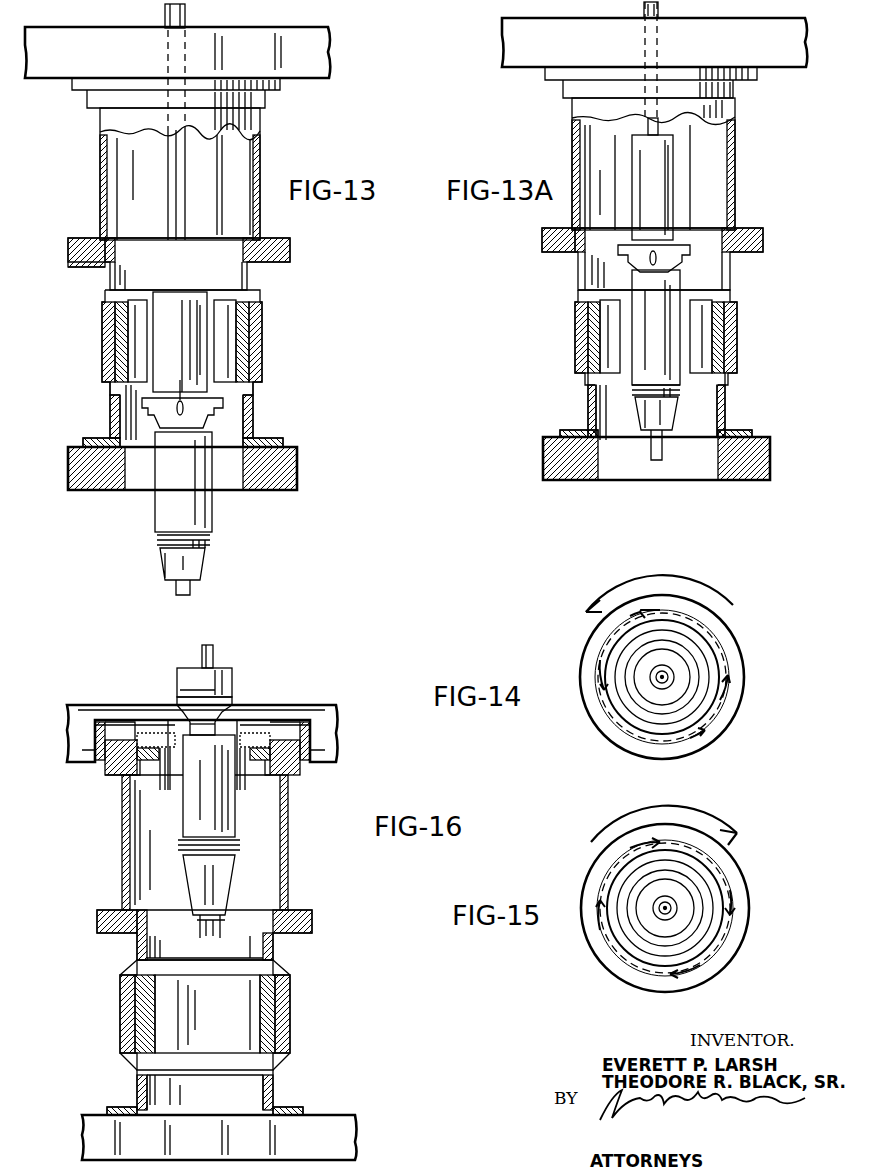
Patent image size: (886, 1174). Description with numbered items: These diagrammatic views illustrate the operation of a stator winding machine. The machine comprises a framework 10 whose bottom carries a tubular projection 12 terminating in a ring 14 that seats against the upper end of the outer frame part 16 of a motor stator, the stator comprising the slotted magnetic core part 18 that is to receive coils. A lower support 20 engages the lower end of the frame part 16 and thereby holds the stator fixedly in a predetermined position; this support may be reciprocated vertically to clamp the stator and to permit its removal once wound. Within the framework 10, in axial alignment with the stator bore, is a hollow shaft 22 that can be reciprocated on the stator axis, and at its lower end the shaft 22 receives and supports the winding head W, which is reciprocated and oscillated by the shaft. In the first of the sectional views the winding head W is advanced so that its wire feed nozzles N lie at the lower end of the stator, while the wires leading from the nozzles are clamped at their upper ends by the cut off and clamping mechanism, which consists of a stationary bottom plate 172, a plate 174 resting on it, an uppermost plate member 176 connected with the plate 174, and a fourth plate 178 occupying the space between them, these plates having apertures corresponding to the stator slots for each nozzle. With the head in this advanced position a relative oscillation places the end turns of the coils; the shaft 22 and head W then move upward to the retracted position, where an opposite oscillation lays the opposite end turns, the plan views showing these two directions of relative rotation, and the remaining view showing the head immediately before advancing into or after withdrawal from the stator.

In FIG. 13, the framework 10 is at (318, 74).
In FIG. 13A, the framework 10 is at (478, 72).
In FIG. 13, the tubular projection 12 is at (272, 146).
In FIG. 13A, the tubular projection 12 is at (737, 170).
In FIG. 16, the tubular projection 12 is at (296, 863).
In FIG. 13, the ring 14 is at (290, 258).
In FIG. 13A, the ring 14 is at (535, 258).
In FIG. 16, the ring 14 is at (312, 930).
In FIG. 13, the outer frame part 16 is at (262, 332).
In FIG. 13A, the outer frame part 16 is at (575, 312).
In FIG. 14, the outer frame part 16 is at (583, 664).
In FIG. 15, the outer frame part 16 is at (594, 882).
In FIG. 16, the outer frame part 16 is at (290, 1000).
In FIG. 13, the slotted magnetic core part 18 is at (250, 376).
In FIG. 13A, the slotted magnetic core part 18 is at (588, 356).
In FIG. 14, the slotted magnetic core part 18 is at (613, 692).
In FIG. 15, the slotted magnetic core part 18 is at (615, 926).
In FIG. 16, the slotted magnetic core part 18 is at (283, 1024).
In FIG. 13, the lower support 20 is at (275, 440).
In FIG. 13A, the lower support 20 is at (566, 435).
In FIG. 16, the lower support 20 is at (310, 1106).
In FIG. 13, the shaft 22 is at (186, 16).
In FIG. 13A, the shaft 22 is at (658, 12).
In FIG. 14, the shaft 22 is at (670, 677).
In FIG. 15, the shaft 22 is at (672, 908).
In FIG. 16, the shaft 22 is at (213, 660).
In FIG. 13, the winding head W is at (210, 340).
In FIG. 13A, the winding head W is at (675, 330).
In FIG. 16, the winding head W is at (233, 802).
In FIG. 13, the wire feed nozzles N is at (205, 412).
In FIG. 13A, the wire feed nozzles N is at (672, 252).
In FIG. 16, the wire feed nozzles N is at (222, 718).
In FIG. 16, the stationary bottom plate 172 is at (270, 775).
In FIG. 16, the plate 174 is at (316, 758).
In FIG. 16, the uppermost plate member 176 is at (122, 768).
In FIG. 16, the fourth plate 178 is at (128, 778).